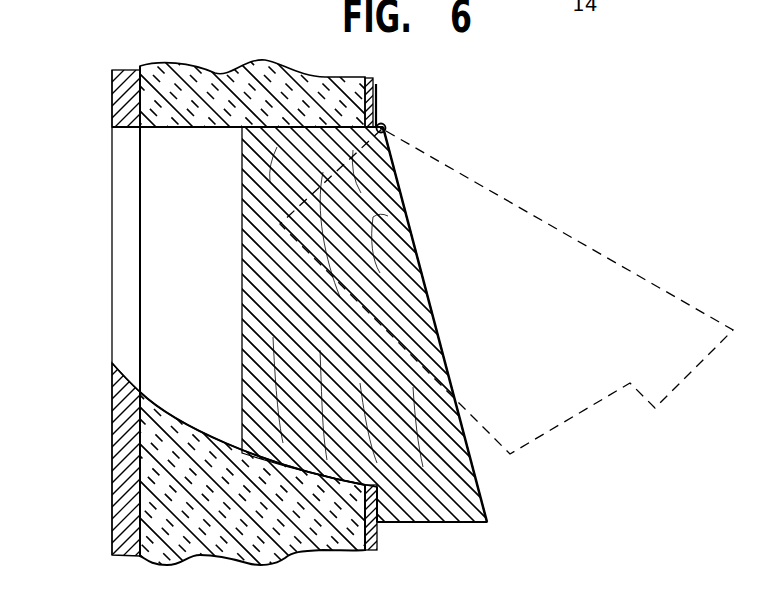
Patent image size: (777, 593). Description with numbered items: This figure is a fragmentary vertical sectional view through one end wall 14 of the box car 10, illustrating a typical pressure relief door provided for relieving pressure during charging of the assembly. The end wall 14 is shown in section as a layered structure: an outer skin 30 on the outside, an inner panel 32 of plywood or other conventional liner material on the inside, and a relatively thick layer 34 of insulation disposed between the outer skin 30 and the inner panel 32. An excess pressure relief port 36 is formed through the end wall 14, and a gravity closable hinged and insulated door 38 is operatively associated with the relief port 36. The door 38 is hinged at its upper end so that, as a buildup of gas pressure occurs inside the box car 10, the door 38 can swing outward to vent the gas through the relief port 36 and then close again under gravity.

The box car 10 is at (113, 512).
The end wall 14 is at (373, 85).
The outer skin 30 is at (377, 532).
The inner panel 32 is at (120, 420).
The layer of insulation 34 is at (165, 65).
The excess pressure relief port 36 is at (165, 128).
The hinged and insulated door 38 is at (522, 205).